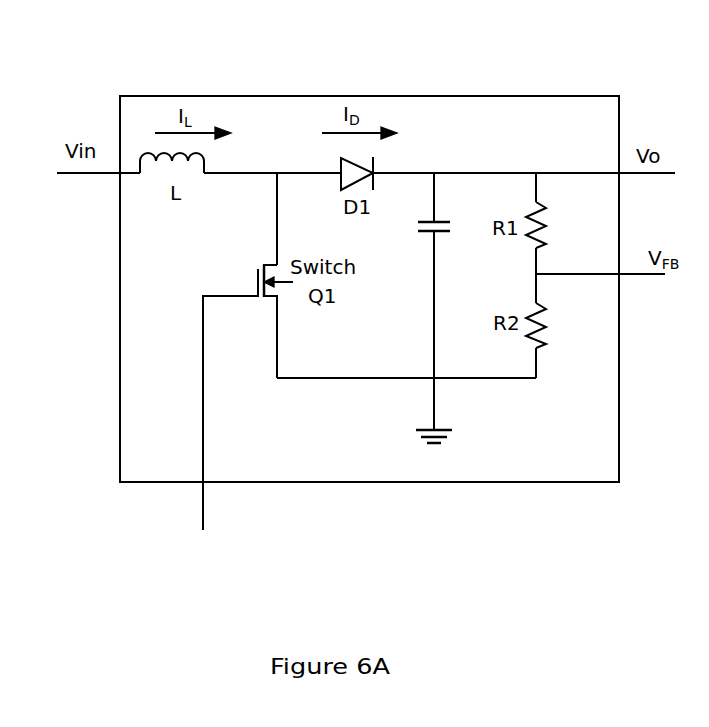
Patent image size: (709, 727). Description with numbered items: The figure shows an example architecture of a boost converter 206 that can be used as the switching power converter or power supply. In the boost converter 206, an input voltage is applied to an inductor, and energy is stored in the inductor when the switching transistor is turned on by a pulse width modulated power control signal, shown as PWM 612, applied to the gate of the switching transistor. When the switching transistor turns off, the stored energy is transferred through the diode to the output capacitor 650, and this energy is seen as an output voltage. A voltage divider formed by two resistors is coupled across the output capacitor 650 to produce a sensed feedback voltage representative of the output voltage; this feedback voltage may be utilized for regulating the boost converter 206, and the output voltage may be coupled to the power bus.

The boost converter 206 is at (398, 86).
The capacitor C1 650 is at (415, 301).
The PWM signal 612 is at (223, 586).